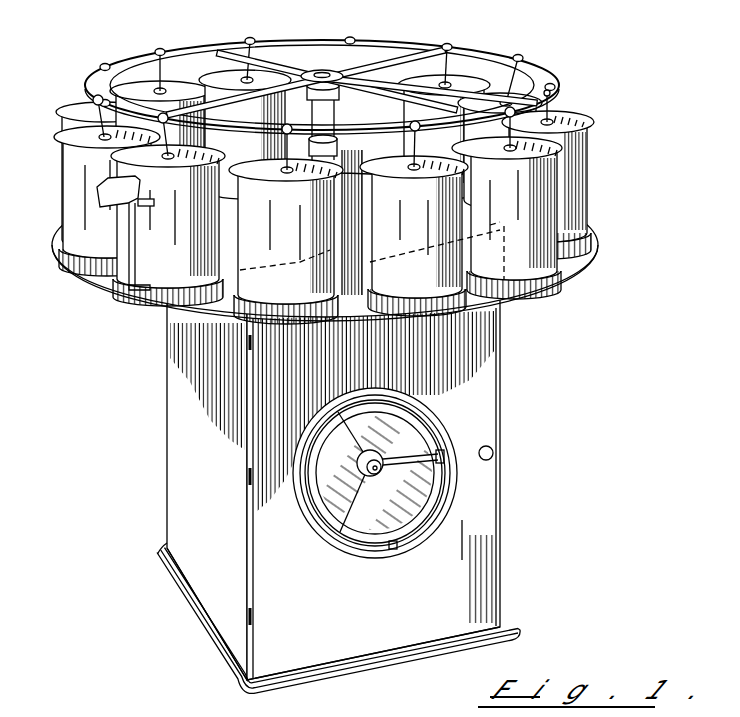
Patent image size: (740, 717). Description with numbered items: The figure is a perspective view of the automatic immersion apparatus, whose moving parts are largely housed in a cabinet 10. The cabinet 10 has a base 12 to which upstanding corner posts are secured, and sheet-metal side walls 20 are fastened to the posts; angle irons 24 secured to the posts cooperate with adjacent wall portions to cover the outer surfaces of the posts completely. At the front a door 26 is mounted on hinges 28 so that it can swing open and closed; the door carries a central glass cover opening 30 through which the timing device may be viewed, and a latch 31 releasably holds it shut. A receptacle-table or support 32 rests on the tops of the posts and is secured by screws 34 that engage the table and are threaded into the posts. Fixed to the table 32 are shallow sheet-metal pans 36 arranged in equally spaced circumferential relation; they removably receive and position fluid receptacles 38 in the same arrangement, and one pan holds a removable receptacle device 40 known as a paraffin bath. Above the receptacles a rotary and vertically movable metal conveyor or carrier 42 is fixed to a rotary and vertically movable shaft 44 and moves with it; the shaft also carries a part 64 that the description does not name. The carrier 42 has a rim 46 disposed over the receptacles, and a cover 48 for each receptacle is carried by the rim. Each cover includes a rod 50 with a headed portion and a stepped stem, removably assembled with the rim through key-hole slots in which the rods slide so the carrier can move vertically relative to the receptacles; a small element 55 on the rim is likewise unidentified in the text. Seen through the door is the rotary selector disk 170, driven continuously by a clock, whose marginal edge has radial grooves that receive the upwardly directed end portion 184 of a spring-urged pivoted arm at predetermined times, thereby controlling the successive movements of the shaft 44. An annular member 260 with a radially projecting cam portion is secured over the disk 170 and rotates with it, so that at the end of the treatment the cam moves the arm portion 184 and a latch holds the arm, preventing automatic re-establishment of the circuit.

The cabinet 10 is at (343, 496).
The base 12 is at (508, 628).
The side walls 20 is at (183, 455).
The angle irons 24 is at (503, 418).
The door 26 is at (480, 585).
The hinges 28 is at (242, 350).
The glass cover opening 30 is at (458, 485).
The latch 31 is at (494, 453).
The receptacle-table 32 is at (530, 300).
The screws 34 is at (243, 270).
The shallow pans 36 is at (75, 262).
The fluid receptacles 38 is at (320, 191).
The receptacle device 40 is at (128, 292).
The conveyor or carrier 42 is at (347, 71).
The shaft 44 is at (312, 112).
The rim 46 is at (550, 72).
The cover 48 is at (583, 123).
The rod 50 is at (553, 104).
The bolts 55 is at (450, 45).
The shaft collar 64 is at (340, 148).
The rotary selector disk 170 is at (400, 512).
The end portion of pivoted arm 184 is at (395, 549).
The annular member 260 is at (355, 548).